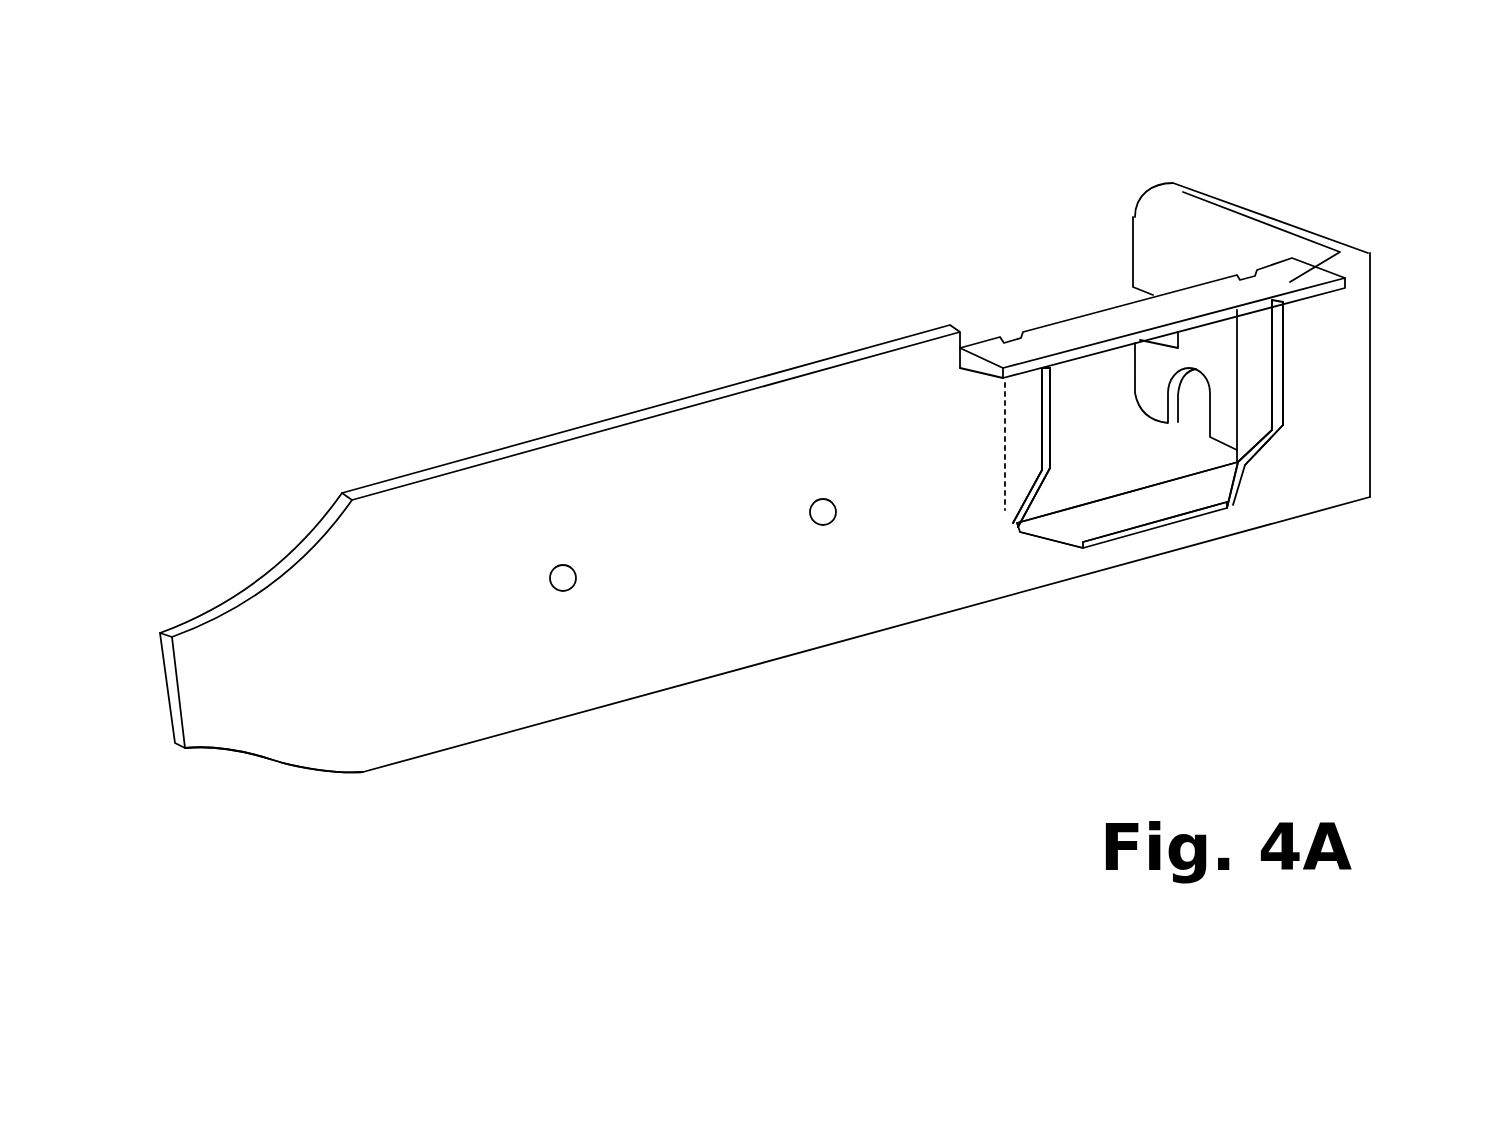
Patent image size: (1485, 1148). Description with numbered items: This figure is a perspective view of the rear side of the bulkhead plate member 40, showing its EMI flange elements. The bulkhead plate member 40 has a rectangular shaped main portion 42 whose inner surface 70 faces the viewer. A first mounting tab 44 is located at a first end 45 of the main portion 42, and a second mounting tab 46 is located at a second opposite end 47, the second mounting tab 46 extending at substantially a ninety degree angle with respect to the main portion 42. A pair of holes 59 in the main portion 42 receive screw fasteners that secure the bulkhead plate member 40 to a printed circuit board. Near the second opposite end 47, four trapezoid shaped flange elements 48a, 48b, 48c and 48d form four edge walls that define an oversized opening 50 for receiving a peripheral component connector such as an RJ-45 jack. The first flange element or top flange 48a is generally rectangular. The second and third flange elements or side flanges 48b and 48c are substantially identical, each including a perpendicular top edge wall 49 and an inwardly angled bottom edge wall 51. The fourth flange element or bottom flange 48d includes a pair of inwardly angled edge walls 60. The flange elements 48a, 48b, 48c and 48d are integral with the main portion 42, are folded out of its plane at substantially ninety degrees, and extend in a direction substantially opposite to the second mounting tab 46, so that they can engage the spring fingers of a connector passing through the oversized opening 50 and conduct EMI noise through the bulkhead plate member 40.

The bulkhead plate member 40 is at (852, 675).
The main portion 42 is at (596, 668).
The first mounting tab 44 is at (222, 735).
The first end 45 is at (363, 772).
The second mounting tab 46 is at (1178, 196).
The second opposite end 47 is at (1313, 385).
The first flange element or top flange 48a is at (983, 353).
The second flange element or side flange 48b is at (1277, 432).
The third flange element or side flange 48c is at (1035, 433).
The fourth flange element or bottom flange 48d is at (1142, 512).
The perpendicular top edge wall 49 is at (1047, 366).
The oversized opening 50 is at (1128, 484).
The inwardly angled bottom edge wall 51 is at (1050, 468).
The holes 59 is at (577, 578).
The inwardly angled edge walls 60 is at (1053, 550).
The inner surface 70 is at (528, 487).